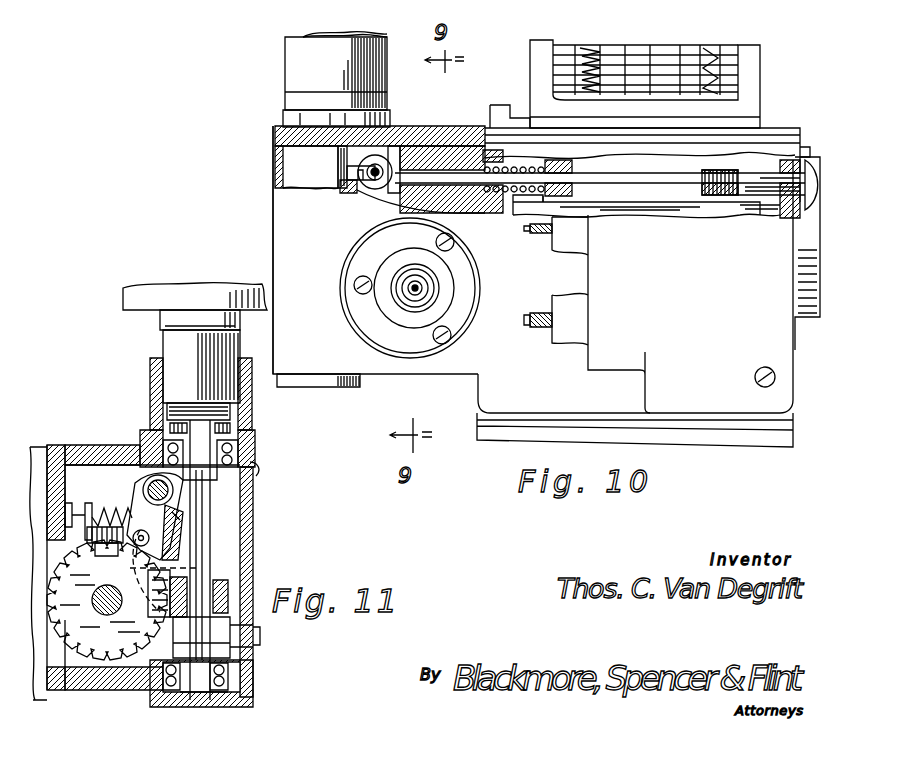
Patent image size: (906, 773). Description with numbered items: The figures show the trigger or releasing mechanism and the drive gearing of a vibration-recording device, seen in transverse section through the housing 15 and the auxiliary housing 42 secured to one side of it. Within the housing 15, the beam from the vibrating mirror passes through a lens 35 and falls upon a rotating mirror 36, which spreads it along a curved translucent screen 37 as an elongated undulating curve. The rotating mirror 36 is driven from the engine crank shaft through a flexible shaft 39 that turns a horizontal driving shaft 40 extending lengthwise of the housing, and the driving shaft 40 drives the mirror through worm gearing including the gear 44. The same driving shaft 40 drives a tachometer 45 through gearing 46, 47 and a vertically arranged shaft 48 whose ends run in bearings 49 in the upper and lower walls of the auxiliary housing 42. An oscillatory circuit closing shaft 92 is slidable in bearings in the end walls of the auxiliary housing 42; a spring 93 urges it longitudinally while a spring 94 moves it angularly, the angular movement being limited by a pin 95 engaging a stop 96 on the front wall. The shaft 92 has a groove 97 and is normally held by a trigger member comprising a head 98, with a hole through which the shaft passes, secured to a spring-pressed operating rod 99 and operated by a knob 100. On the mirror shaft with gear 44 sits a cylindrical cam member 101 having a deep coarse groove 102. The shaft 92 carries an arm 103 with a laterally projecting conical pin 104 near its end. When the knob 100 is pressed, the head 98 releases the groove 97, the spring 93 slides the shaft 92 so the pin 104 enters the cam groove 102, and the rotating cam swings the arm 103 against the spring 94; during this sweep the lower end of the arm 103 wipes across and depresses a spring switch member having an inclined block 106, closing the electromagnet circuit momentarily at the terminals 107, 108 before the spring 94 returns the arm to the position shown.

In FIG. 10, the housing 15 is at (490, 396).
In FIG. 10, the lens 35 is at (648, 204).
In FIG. 10, the rotating mirror 36 is at (690, 204).
In FIG. 10, the curved translucent screen 37 is at (690, 48).
In FIG. 10, the flexible shaft 39 is at (415, 300).
In FIG. 11, the driving shaft 40 is at (100, 620).
In FIG. 10, the auxiliary housing 42 is at (345, 362).
In FIG. 11, the auxiliary housing 42 is at (55, 450).
In FIG. 11, the worm gearing 44 is at (92, 522).
In FIG. 10, the tachometer 45 is at (305, 36).
In FIG. 11, the tachometer 45 is at (130, 295).
In FIG. 11, the gearing 46 is at (101, 522).
In FIG. 11, the gearing 47 is at (228, 590).
In FIG. 10, the vertically arranged shaft 48 is at (327, 147).
In FIG. 11, the vertically arranged shaft 48 is at (192, 430).
In FIG. 11, the bearings 49 is at (163, 455).
In FIG. 10, the oscillatory circuit closing shaft 92 is at (382, 162).
In FIG. 11, the oscillatory circuit closing shaft 92 is at (152, 488).
In FIG. 11, the spring 93 is at (253, 466).
In FIG. 11, the spring 94 is at (82, 518).
In FIG. 10, the pin 95 is at (352, 171).
In FIG. 10, the stop 96 is at (345, 180).
In FIG. 10, the groove 97 is at (372, 186).
In FIG. 10, the head 98 is at (398, 163).
In FIG. 10, the spring-pressed operating rod 99 is at (456, 170).
In FIG. 10, the knob 100 is at (760, 185).
In FIG. 11, the cam member 101 is at (148, 538).
In FIG. 11, the cam groove 102 is at (172, 560).
In FIG. 11, the arm 103 is at (152, 536).
In FIG. 11, the conical pin 104 is at (172, 512).
In FIG. 11, the inclined block 106 is at (197, 568).
In FIG. 11, the terminal 107 is at (107, 600).
In FIG. 11, the terminal 108 is at (118, 606).